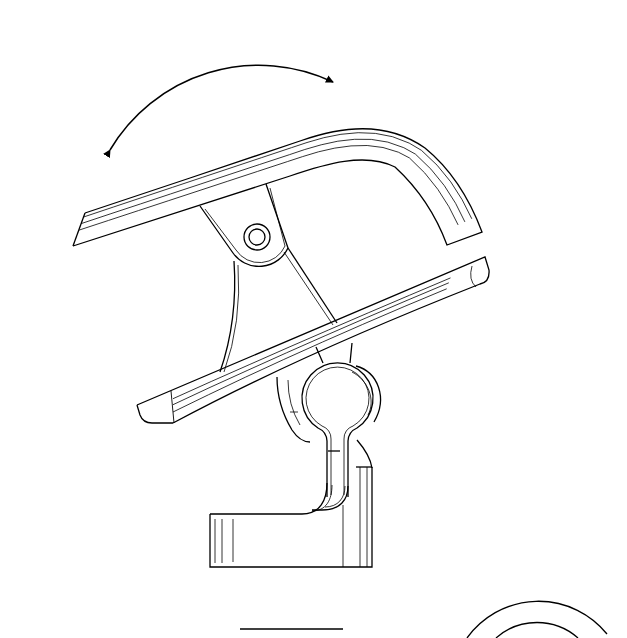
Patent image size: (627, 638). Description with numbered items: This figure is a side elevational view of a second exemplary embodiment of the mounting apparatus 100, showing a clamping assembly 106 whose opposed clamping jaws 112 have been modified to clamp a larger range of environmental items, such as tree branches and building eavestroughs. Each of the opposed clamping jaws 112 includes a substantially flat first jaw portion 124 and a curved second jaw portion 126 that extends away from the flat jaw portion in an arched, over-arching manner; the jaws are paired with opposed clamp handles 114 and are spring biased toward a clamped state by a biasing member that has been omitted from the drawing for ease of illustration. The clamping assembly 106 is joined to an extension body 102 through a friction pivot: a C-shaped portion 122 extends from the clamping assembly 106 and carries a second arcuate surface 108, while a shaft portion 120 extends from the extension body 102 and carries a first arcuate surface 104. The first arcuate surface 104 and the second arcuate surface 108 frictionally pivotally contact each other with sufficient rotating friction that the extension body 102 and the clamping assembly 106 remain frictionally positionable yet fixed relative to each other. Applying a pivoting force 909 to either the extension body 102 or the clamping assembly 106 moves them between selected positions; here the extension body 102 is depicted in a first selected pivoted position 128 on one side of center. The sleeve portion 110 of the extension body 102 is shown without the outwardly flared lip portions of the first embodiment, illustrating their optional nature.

The apparatus 100 is at (425, 102).
The extension body 102 is at (395, 557).
The first arcuate surface 104 is at (378, 388).
The clamping assembly 106 is at (257, 330).
The second arcuate surface 108 is at (367, 363).
The sleeve portion 110 is at (258, 547).
The opposed clamping jaws 112 is at (563, 220).
The opposed clamp handles 114 is at (80, 220).
The shaft portion 120 is at (343, 470).
The C-shaped portion 122 is at (297, 410).
The first jaw portion 124 is at (488, 279).
The second jaw portion 126 is at (458, 185).
The first selected pivoted position 128 is at (83, 140).
The pivoting force 909 is at (197, 75).